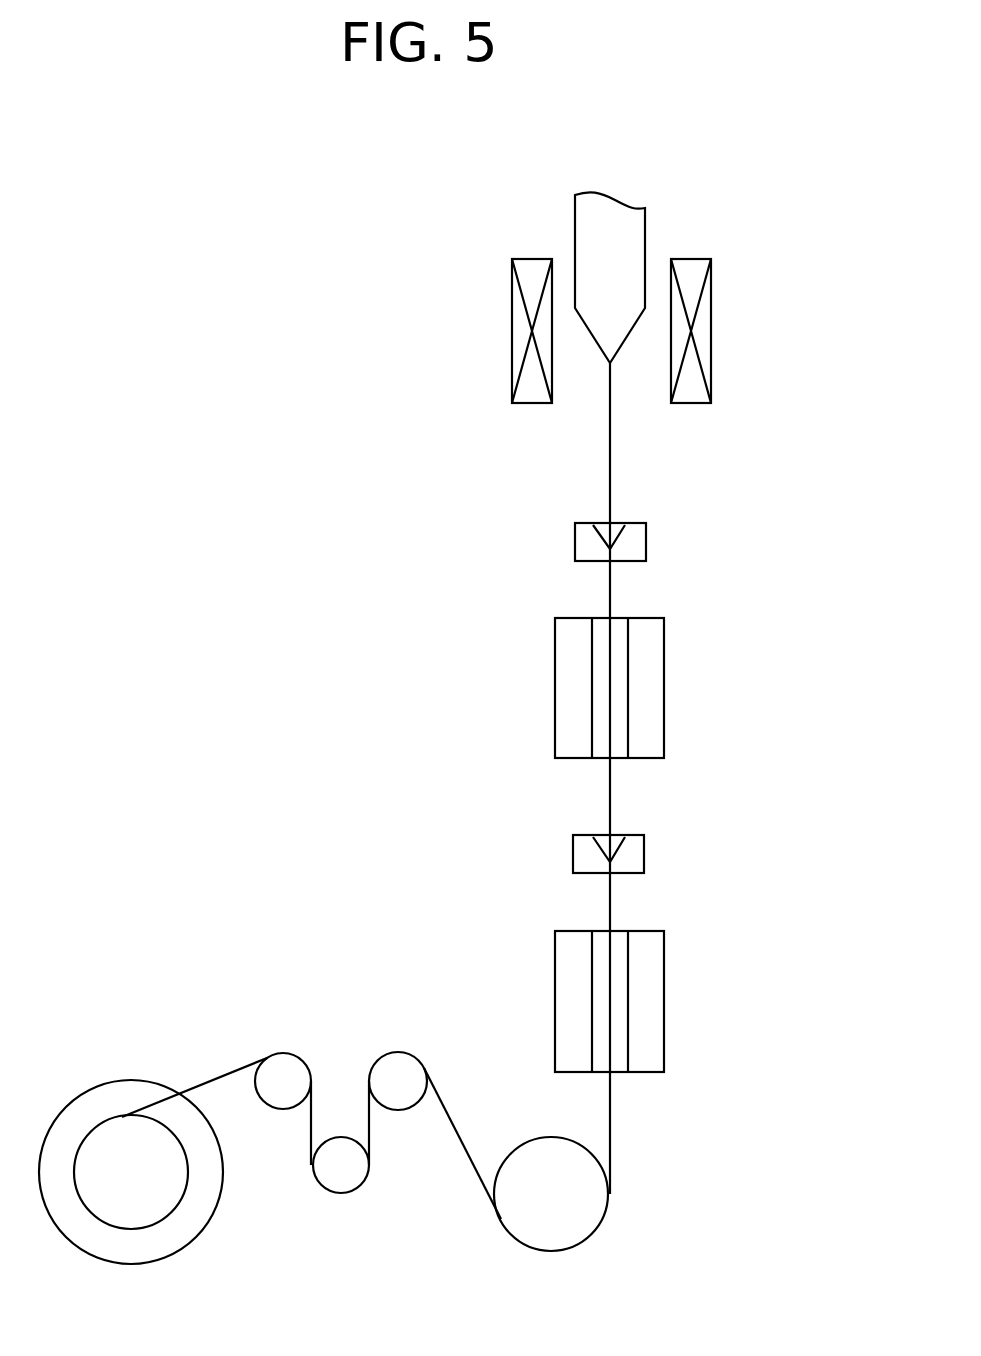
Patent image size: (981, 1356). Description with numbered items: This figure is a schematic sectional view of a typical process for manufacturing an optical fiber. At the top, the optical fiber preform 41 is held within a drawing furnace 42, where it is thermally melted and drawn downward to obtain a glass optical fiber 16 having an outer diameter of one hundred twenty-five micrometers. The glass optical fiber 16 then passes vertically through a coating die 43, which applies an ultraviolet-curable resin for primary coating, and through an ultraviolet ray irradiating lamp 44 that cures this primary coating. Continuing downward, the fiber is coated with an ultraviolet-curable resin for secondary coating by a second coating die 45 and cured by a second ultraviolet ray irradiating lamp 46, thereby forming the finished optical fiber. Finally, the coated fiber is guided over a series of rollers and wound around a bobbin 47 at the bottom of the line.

The glass optical fiber 16 is at (607, 458).
The optical fiber preform 41 is at (585, 215).
The drawing furnace 42 is at (700, 332).
The coating die 43 is at (647, 540).
The ultraviolet ray irradiating lamp 44 is at (665, 665).
The coating die 45 is at (645, 852).
The ultraviolet ray irradiating lamp 46 is at (665, 998).
The bobbin 47 is at (135, 1083).